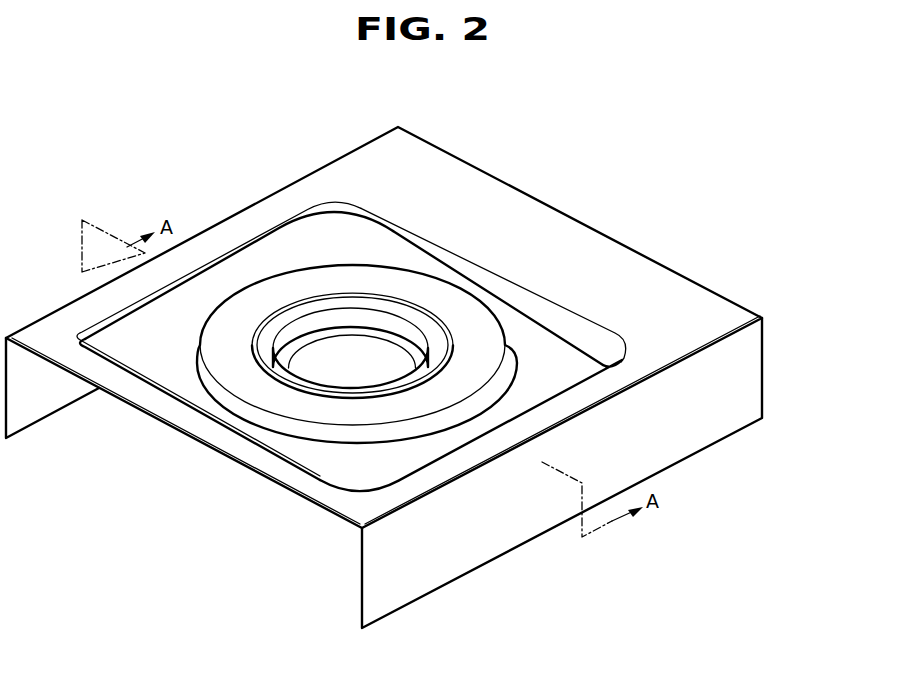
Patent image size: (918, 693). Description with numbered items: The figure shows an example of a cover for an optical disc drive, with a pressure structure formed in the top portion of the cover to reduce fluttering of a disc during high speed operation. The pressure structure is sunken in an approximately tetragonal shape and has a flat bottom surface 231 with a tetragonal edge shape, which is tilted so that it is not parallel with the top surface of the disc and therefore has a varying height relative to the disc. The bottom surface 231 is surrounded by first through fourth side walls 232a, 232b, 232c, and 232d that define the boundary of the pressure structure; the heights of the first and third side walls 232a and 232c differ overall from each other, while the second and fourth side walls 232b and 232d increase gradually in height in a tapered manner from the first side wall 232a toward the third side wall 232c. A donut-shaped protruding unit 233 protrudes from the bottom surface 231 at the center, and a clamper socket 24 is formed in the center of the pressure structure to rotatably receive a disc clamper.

The clamper socket 24 is at (391, 321).
The bottom surface 231 is at (568, 374).
The first side wall 232a is at (245, 244).
The second side wall 232b is at (497, 283).
The third side wall 232c is at (618, 366).
The fourth side wall 232d is at (207, 417).
The protruding unit 233 is at (340, 277).